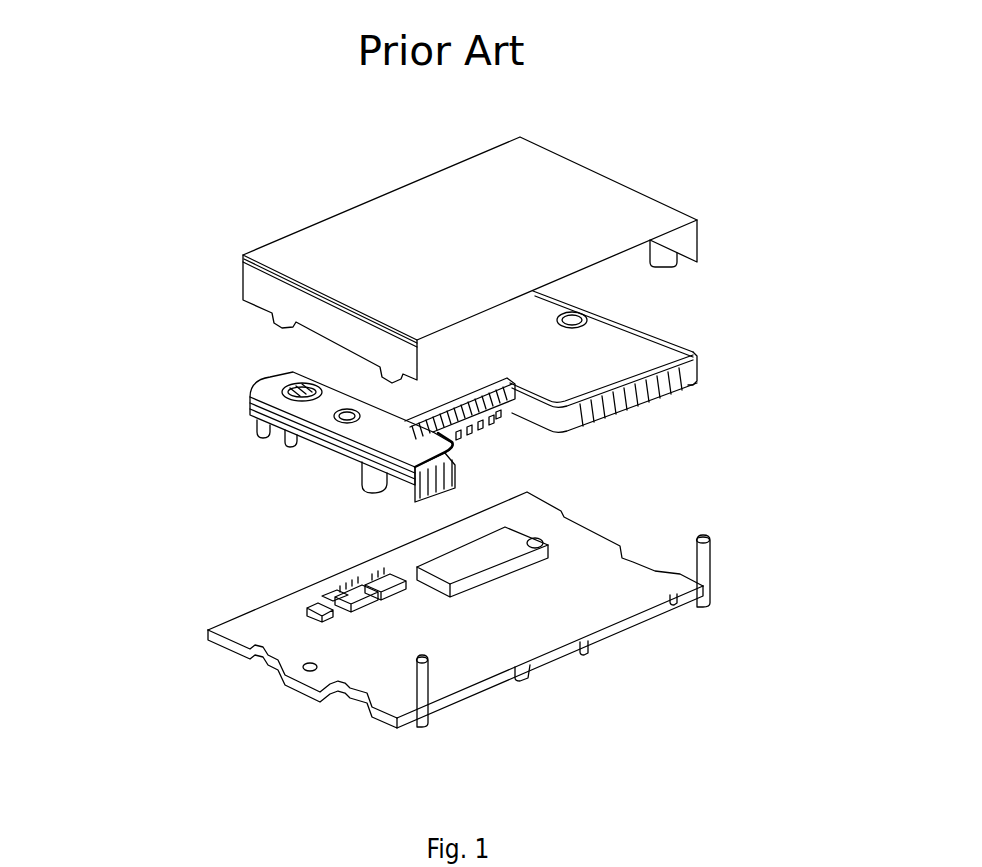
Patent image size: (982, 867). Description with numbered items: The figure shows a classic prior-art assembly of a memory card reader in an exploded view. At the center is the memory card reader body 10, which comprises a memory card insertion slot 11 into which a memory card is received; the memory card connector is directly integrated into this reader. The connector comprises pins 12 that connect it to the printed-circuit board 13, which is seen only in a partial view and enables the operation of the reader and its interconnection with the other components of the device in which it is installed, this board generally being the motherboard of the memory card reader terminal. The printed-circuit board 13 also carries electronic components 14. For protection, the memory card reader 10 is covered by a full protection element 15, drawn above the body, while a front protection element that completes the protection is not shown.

The memory card reader body 10 is at (247, 418).
The memory card insertion slot 11 is at (627, 393).
The pins 12 is at (500, 412).
The printed-circuit board 13 is at (557, 618).
The electronic components 14 is at (318, 583).
The full protection element 15 is at (242, 287).